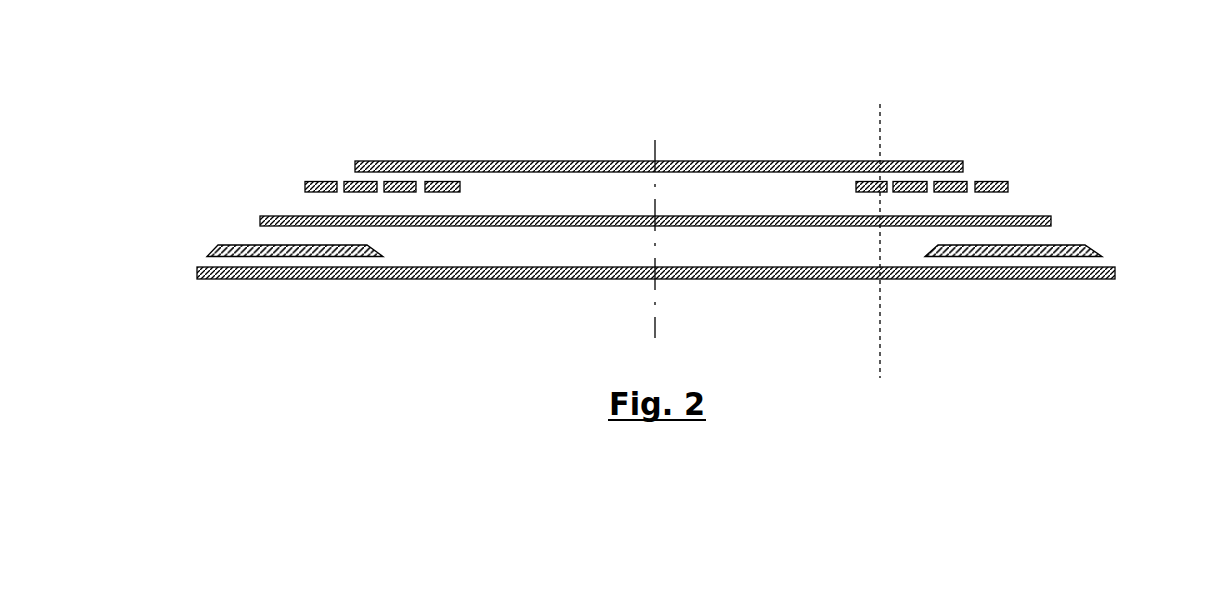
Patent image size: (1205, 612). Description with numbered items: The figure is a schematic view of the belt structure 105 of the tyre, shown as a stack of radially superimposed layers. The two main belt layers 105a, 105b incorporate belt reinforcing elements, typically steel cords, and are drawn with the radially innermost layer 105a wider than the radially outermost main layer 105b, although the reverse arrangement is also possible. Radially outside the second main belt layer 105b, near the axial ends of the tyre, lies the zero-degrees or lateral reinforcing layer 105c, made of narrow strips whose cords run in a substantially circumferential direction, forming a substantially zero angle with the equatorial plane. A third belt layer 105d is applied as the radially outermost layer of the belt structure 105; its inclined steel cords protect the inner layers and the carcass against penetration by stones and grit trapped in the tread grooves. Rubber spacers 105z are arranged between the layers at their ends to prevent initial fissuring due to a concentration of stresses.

The belt structure 105 is at (811, 124).
The radially innermost main belt layer 105a is at (255, 280).
The radially outermost main belt layer 105b is at (258, 217).
The zero-degrees reinforcing layer 105c is at (307, 181).
The third belt layer 105d is at (380, 160).
The rubber spacers 105z is at (208, 252).